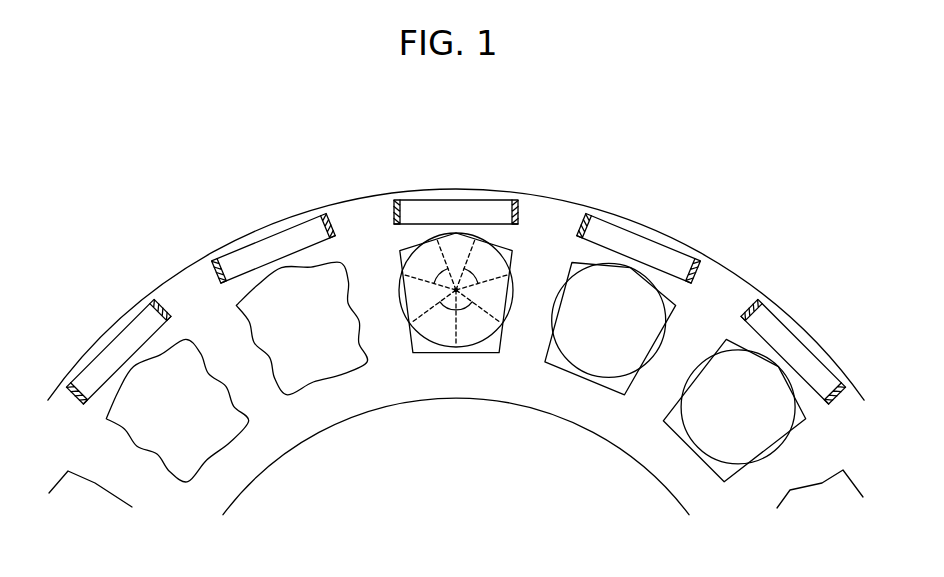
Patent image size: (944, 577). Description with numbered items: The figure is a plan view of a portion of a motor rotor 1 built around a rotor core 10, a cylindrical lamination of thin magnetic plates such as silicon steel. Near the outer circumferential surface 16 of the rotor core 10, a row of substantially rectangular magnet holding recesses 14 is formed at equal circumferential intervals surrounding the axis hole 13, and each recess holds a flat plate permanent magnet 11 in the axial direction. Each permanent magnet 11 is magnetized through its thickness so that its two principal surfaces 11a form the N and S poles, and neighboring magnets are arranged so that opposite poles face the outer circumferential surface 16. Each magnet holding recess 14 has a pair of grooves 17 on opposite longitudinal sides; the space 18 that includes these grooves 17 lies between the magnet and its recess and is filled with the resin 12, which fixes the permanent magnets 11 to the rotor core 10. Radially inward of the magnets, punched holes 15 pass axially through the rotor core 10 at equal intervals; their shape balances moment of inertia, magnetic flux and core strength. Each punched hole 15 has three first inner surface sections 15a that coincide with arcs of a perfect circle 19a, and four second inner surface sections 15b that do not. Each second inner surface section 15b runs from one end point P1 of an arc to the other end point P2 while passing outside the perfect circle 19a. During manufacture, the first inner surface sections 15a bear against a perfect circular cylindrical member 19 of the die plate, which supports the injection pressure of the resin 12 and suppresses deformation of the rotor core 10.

The motor rotor 1 is at (214, 179).
The rotor core 10 is at (565, 412).
The permanent magnet 11 is at (511, 192).
The principal surface 11a is at (675, 271).
The resin 12 is at (758, 299).
The axis hole 13 is at (419, 408).
The magnet holding recess 14 is at (239, 240).
The punched hole 15 is at (205, 447).
The first inner surface section 15a is at (460, 226).
The second inner surface section 15b is at (392, 262).
The outer circumferential surface 16 is at (444, 188).
The groove 17 is at (342, 220).
The space 18 is at (329, 206).
The perfect circular cylindrical member 19 is at (596, 368).
The perfect circle 19a is at (628, 396).
The end point P1 is at (430, 230).
The end point P2 is at (399, 280).